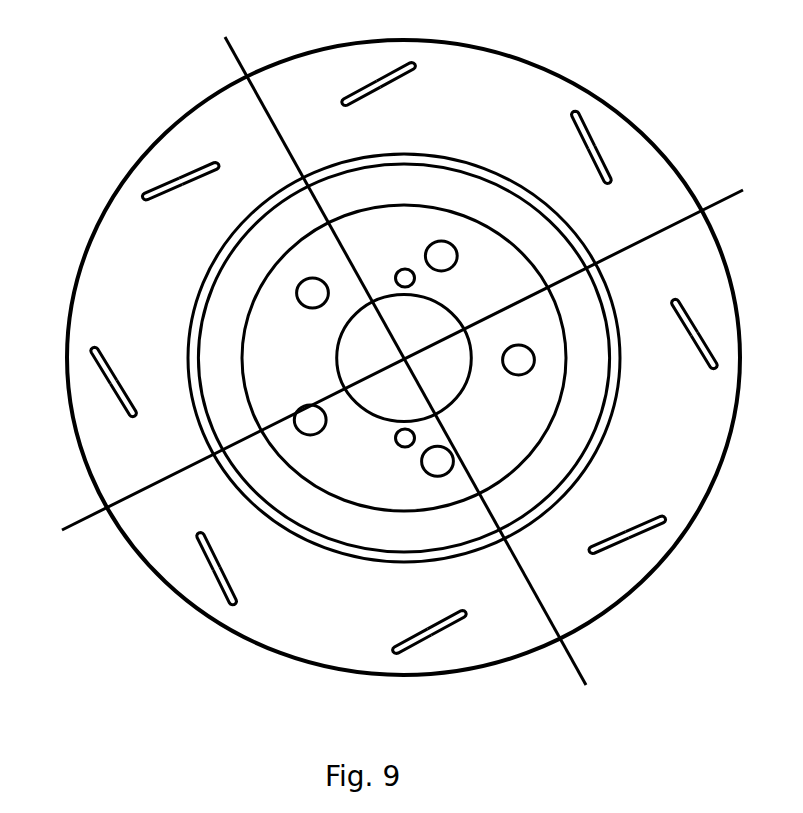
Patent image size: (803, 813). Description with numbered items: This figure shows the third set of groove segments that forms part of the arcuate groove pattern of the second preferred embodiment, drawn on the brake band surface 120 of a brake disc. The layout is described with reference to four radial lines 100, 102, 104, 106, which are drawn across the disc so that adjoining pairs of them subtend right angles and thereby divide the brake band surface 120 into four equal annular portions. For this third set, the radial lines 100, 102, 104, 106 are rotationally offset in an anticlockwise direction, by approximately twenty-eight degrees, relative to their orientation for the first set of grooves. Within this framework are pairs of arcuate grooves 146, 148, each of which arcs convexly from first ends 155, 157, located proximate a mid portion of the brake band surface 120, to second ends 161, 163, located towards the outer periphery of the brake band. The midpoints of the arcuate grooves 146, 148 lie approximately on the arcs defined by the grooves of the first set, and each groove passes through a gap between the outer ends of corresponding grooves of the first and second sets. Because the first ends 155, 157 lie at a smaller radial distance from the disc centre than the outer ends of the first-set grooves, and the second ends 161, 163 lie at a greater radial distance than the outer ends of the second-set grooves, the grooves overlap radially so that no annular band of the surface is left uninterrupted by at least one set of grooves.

The radial line 100 is at (235, 51).
The radial line 102 is at (737, 197).
The radial line 104 is at (583, 677).
The radial line 106 is at (72, 522).
The brake band surface 120 is at (404, 341).
The arcuate groove 146 is at (407, 361).
The arcuate groove 148 is at (407, 361).
The first end 155 is at (223, 169).
The first end 157 is at (345, 114).
The second end 161 is at (136, 211).
The second end 163 is at (421, 70).